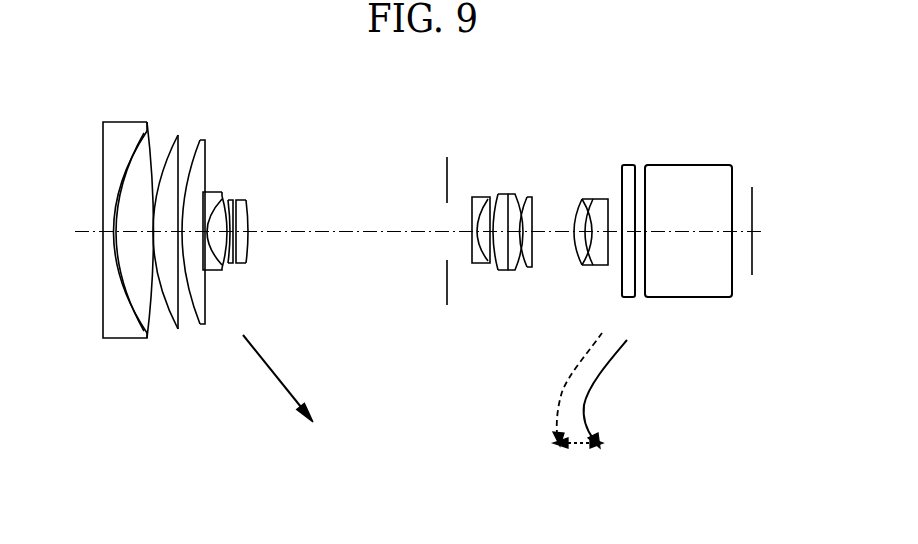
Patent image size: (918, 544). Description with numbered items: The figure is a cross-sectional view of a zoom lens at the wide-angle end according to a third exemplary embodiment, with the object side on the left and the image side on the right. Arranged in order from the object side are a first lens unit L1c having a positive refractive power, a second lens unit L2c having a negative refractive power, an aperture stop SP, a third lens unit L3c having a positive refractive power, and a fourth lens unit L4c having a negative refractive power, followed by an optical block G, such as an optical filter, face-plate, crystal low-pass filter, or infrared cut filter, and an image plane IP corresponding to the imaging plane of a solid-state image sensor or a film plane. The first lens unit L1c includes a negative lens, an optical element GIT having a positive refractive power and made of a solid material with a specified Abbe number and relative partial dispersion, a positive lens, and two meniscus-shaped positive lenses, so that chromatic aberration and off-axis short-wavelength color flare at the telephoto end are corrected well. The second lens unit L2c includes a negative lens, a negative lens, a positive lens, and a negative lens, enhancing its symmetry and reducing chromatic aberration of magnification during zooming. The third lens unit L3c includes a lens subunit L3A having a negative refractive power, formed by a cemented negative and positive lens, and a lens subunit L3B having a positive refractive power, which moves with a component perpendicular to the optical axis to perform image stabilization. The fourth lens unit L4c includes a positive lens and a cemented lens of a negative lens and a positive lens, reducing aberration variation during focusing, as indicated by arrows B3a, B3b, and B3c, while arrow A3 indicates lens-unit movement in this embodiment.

The optical element GIT is at (136, 143).
The first lens unit L1c is at (162, 246).
The second lens unit L2c is at (277, 275).
The arrow A3 is at (277, 375).
The aperture stop SP is at (448, 217).
The lens subunit L3A is at (486, 219).
The lens subunit L3B is at (519, 219).
The third lens unit L3c is at (488, 267).
The fourth lens unit L4c is at (617, 272).
The optical block G is at (742, 155).
The image plane IP is at (752, 209).
The arrow B3a is at (585, 393).
The arrow B3b is at (562, 395).
The arrow B3c is at (587, 448).